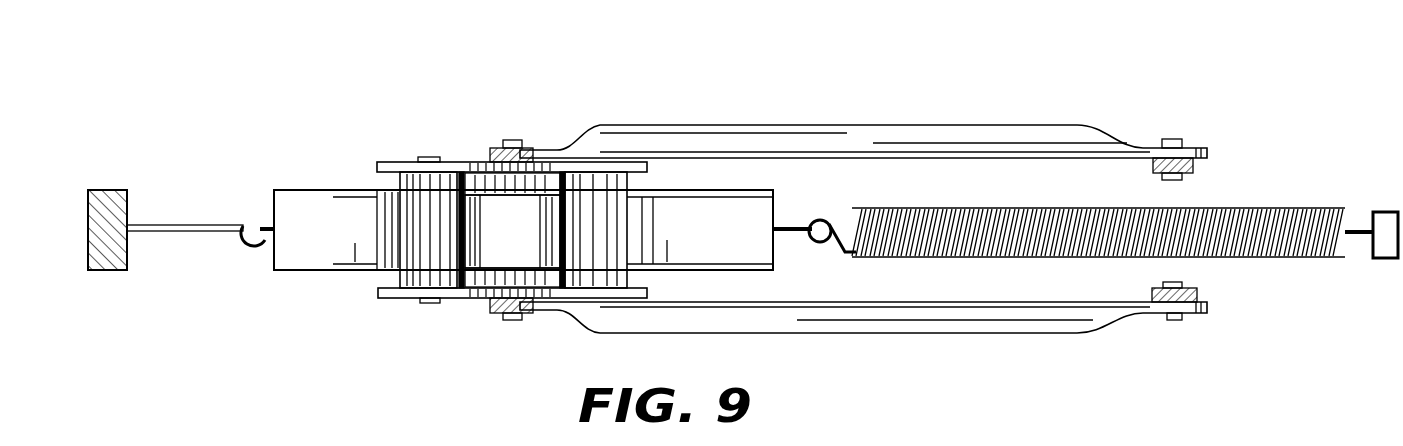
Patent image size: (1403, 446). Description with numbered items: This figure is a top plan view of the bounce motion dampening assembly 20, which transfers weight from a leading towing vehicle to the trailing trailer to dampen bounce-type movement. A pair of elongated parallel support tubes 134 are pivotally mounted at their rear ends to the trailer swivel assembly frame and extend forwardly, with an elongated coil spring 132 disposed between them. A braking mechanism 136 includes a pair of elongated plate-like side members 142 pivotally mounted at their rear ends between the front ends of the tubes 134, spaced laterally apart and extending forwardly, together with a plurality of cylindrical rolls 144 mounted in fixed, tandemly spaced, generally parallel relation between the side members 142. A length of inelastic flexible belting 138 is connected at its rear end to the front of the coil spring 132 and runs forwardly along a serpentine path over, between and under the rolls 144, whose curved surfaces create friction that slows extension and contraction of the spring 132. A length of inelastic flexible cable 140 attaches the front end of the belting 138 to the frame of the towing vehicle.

The bounce motion dampening assembly 20 is at (1232, 118).
The elongated coil spring 132 is at (1267, 257).
The elongated support tubes 134 is at (1000, 94).
The braking mechanism 136 is at (408, 306).
The belting 138 is at (728, 258).
The cable 140 is at (214, 194).
The side members 142 is at (457, 162).
The cylindrical rolls 144 is at (405, 176).